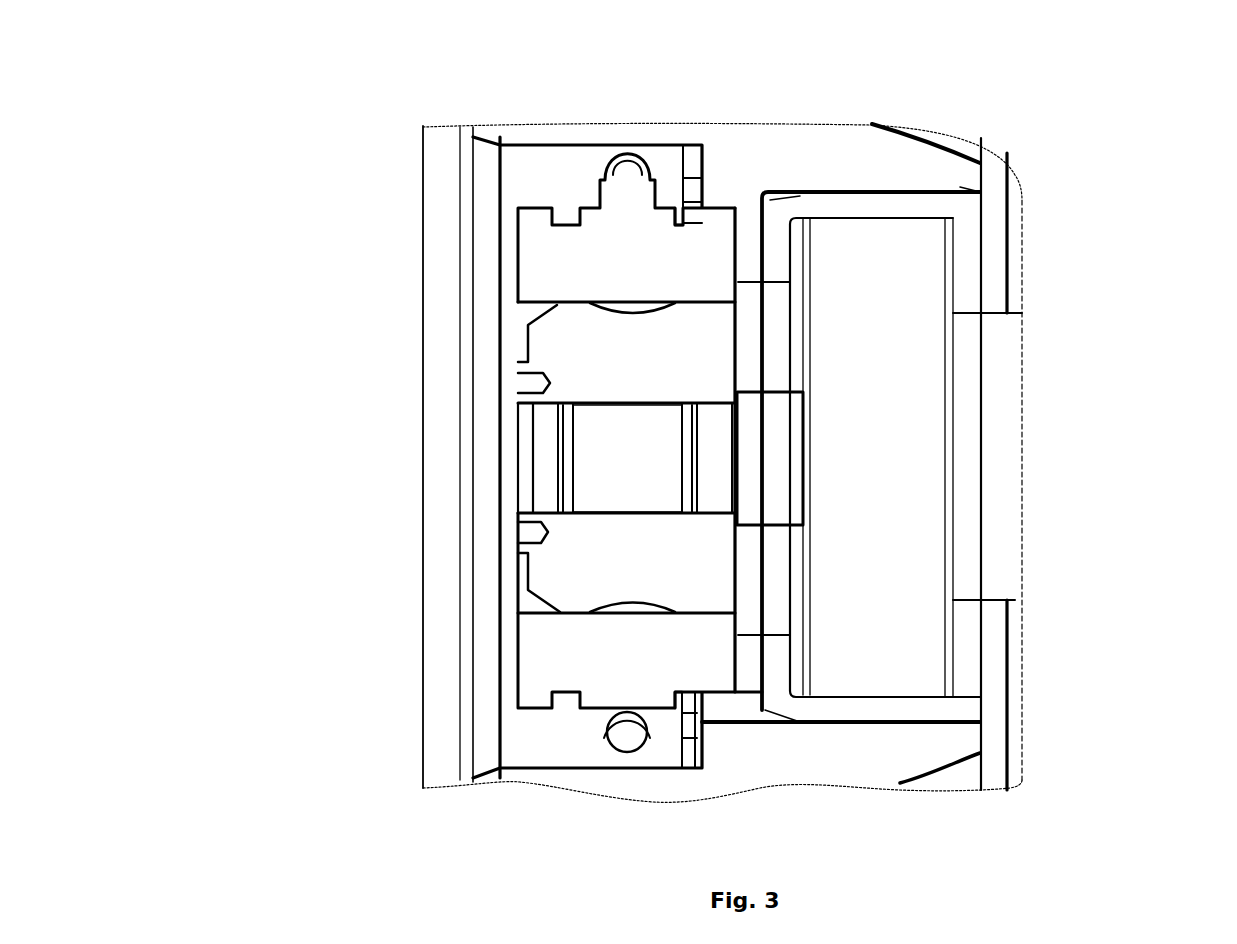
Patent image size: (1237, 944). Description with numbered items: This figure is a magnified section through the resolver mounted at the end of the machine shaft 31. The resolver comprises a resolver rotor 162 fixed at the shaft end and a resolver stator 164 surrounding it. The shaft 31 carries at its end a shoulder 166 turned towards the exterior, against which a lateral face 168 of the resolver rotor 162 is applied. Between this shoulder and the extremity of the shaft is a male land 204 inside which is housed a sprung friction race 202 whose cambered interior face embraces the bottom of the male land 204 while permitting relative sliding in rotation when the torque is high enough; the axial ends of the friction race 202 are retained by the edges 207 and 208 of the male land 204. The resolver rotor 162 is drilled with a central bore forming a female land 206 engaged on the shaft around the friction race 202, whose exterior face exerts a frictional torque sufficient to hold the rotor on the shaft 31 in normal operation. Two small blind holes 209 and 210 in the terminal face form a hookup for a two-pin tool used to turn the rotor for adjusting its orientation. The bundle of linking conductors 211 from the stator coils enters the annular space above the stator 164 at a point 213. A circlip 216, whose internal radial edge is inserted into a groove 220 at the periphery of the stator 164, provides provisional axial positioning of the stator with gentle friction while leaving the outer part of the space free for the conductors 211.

The shaft 31 is at (784, 470).
The resolver rotor 162 is at (585, 586).
The resolver stator 164 is at (553, 667).
The shoulder 166 is at (730, 397).
The lateral face 168 is at (750, 330).
The friction race 202 is at (620, 452).
The male land 204 is at (565, 462).
The female land 206 is at (543, 410).
The edge of the male land 207 is at (678, 498).
The edge of the male land 208 is at (575, 502).
The blind hole 209 is at (518, 382).
The blind hole 210 is at (530, 540).
The bundle of linking conductors 211 is at (623, 732).
The entry point 213 is at (616, 152).
The circlip 216 is at (696, 150).
The groove 220 is at (679, 207).